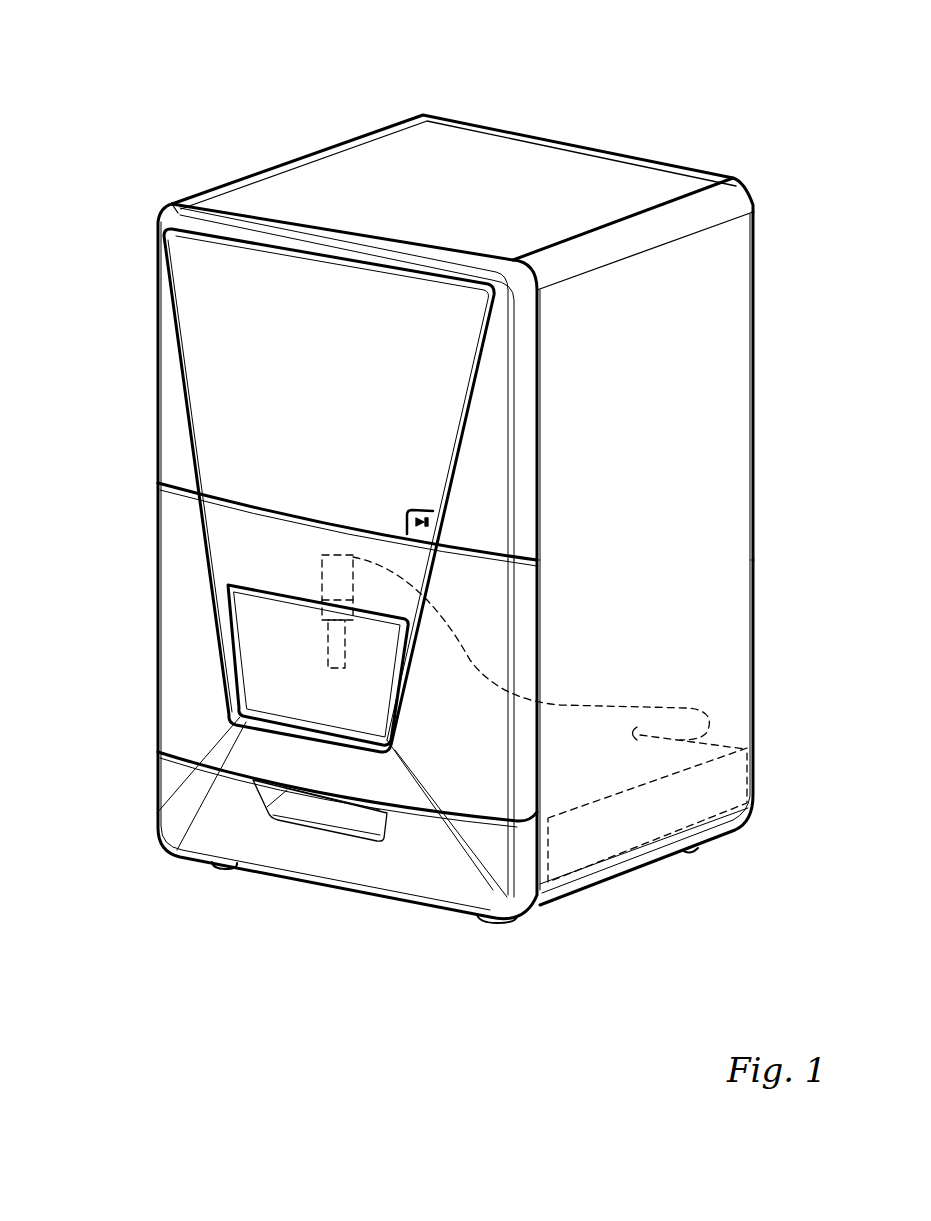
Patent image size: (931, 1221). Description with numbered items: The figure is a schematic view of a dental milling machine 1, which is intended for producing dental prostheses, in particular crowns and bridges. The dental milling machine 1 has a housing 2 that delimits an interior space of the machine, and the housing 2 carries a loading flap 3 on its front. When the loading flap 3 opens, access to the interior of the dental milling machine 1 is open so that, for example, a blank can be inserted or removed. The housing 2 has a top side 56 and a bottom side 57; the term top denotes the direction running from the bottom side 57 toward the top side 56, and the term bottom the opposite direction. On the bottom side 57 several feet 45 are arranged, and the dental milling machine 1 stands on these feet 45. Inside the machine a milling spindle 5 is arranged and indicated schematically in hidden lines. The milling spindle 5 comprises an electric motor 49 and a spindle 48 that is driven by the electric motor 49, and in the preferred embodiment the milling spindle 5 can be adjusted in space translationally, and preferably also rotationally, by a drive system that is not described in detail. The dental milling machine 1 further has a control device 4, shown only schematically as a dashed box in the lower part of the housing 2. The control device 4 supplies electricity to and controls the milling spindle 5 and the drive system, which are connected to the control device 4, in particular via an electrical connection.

The dental milling machine 1 is at (436, 497).
The housing 2 is at (441, 113).
The loading flap 3 is at (157, 684).
The control device 4 is at (747, 773).
The milling spindle 5 is at (320, 575).
The feet 45 is at (217, 868).
The spindle 48 is at (328, 657).
The electric motor 49 is at (322, 604).
The top side 56 is at (475, 198).
The bottom side 57 is at (565, 900).